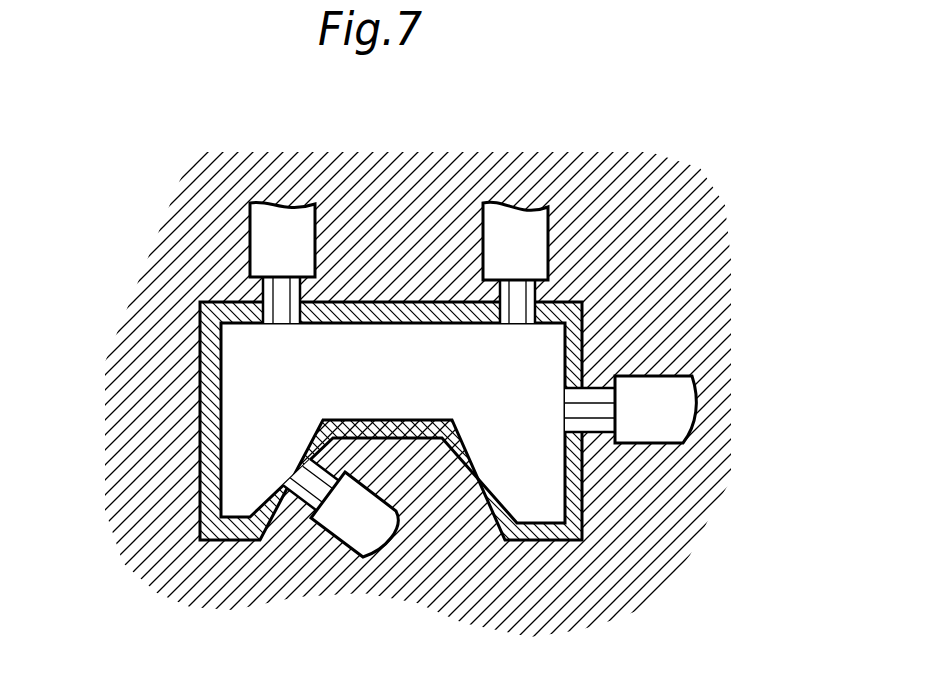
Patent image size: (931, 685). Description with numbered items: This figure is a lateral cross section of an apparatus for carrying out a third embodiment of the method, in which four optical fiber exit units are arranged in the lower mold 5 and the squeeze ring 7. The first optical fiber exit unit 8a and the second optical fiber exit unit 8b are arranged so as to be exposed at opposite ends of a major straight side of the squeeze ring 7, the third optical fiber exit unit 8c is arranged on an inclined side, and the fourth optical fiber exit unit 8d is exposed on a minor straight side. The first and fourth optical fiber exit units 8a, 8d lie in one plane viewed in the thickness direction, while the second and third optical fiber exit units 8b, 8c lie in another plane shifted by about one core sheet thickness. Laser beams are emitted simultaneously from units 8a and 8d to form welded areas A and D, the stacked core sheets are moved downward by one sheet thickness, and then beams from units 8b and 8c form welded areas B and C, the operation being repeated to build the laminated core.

The lower mold 5 is at (432, 198).
The squeeze ring 7 is at (580, 350).
The first optical fiber exit unit 8a is at (282, 233).
The second optical fiber exit unit 8b is at (515, 232).
The third optical fiber exit unit 8c is at (337, 522).
The fourth optical fiber exit unit 8d is at (661, 420).